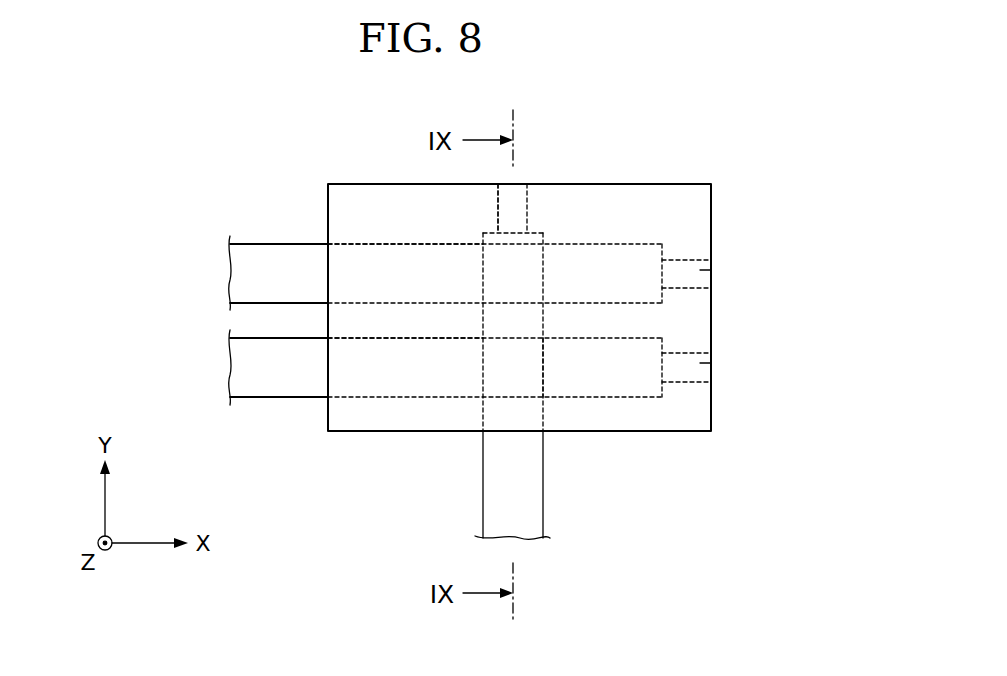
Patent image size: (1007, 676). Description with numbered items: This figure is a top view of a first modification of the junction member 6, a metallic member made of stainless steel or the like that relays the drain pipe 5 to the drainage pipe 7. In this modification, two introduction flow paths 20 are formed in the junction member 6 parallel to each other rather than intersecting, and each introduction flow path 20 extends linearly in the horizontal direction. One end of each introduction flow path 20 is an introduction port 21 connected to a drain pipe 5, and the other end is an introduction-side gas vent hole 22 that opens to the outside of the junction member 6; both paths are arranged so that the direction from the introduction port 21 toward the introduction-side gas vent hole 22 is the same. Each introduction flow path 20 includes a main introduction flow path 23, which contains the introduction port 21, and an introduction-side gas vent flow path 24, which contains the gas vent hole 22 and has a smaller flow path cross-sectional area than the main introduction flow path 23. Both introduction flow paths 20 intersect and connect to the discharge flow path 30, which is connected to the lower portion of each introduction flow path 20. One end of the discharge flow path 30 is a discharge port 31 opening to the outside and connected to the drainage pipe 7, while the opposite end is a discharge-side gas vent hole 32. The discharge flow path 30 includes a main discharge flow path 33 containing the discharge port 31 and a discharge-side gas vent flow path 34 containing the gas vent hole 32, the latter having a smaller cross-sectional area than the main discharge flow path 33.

The drain pipe 5 is at (247, 255).
The junction member 6 is at (711, 184).
The drainage pipe 7 is at (500, 512).
The introduction flow path 20 is at (402, 245).
The introduction port 21 is at (327, 267).
The introduction-side gas vent hole 22 is at (711, 270).
The main introduction flow path 23 is at (635, 243).
The introduction-side gas vent flow path 24 is at (685, 258).
The discharge flow path 30 is at (543, 233).
The discharge port 31 is at (505, 432).
The discharge-side gas vent hole 32 is at (519, 184).
The main discharge flow path 33 is at (543, 370).
The discharge-side gas vent flow path 34 is at (528, 208).